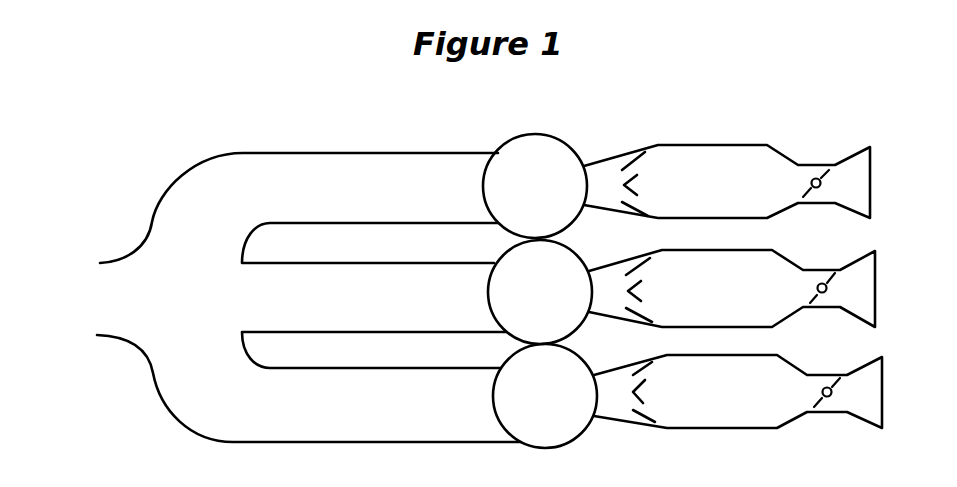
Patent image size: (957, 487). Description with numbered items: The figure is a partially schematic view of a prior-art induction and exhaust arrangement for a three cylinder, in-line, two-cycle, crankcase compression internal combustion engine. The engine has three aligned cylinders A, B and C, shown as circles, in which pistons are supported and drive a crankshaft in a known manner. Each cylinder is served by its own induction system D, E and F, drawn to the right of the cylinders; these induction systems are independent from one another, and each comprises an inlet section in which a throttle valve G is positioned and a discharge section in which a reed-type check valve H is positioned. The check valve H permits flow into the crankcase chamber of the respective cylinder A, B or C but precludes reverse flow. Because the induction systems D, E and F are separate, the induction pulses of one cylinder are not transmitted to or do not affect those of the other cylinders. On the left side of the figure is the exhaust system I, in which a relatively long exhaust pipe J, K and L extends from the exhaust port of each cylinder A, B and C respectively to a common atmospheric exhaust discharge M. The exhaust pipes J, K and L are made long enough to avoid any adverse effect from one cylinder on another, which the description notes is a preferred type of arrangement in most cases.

The cylinder A is at (536, 137).
The cylinder B is at (535, 242).
The cylinder C is at (538, 348).
The induction system D is at (703, 145).
The induction system E is at (753, 250).
The induction system F is at (745, 356).
The throttle valve G is at (815, 178).
The reed-type check valve H is at (641, 150).
The exhaust system I is at (265, 151).
The exhaust pipe J is at (410, 153).
The exhaust pipe K is at (356, 262).
The exhaust pipe L is at (342, 368).
The common atmospheric exhaust discharge M is at (112, 262).